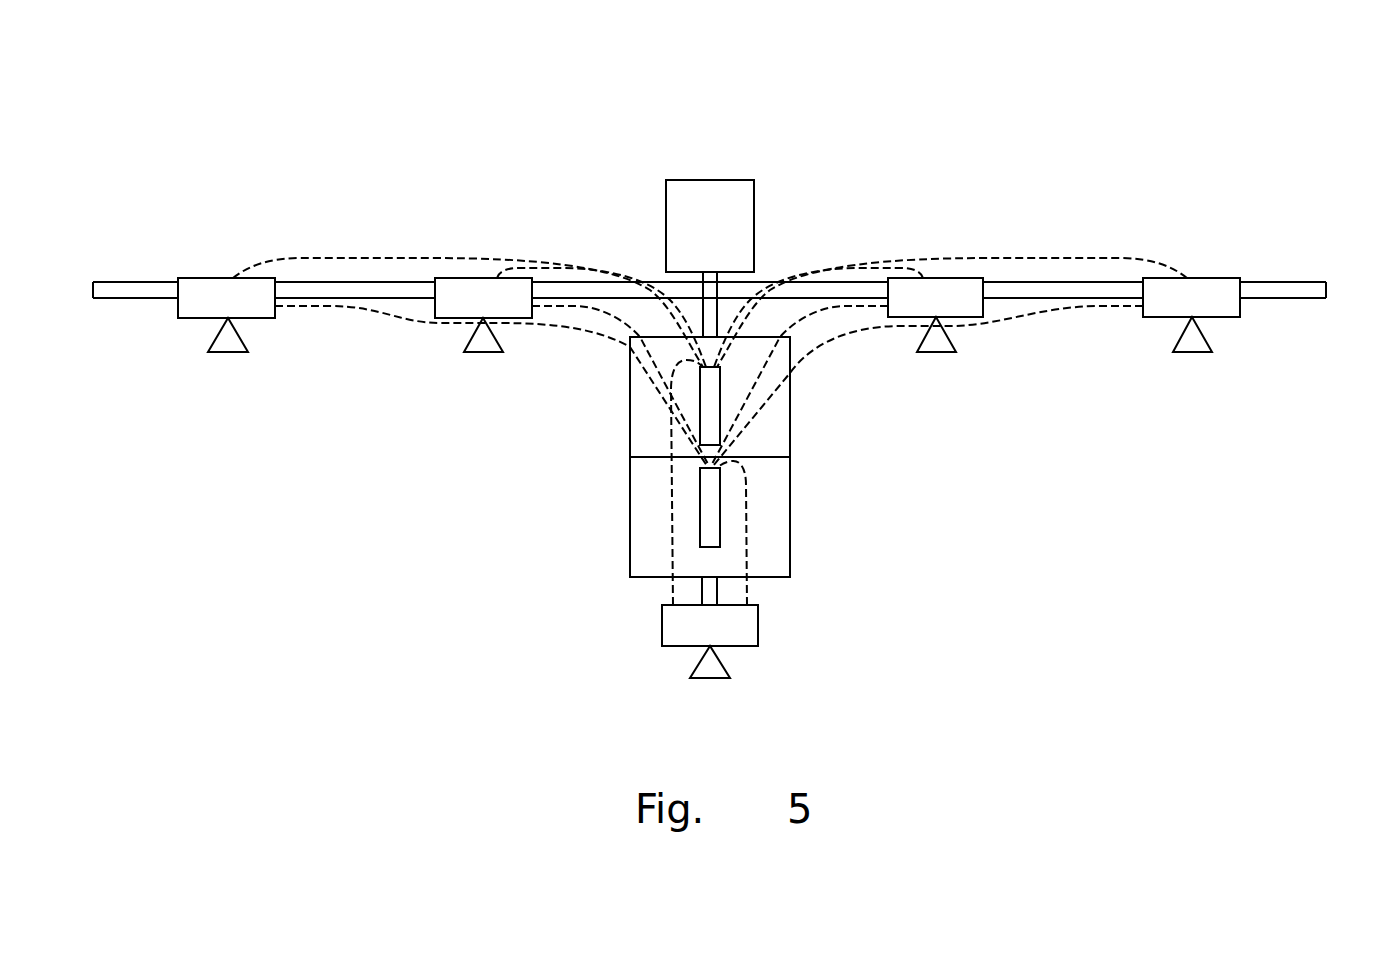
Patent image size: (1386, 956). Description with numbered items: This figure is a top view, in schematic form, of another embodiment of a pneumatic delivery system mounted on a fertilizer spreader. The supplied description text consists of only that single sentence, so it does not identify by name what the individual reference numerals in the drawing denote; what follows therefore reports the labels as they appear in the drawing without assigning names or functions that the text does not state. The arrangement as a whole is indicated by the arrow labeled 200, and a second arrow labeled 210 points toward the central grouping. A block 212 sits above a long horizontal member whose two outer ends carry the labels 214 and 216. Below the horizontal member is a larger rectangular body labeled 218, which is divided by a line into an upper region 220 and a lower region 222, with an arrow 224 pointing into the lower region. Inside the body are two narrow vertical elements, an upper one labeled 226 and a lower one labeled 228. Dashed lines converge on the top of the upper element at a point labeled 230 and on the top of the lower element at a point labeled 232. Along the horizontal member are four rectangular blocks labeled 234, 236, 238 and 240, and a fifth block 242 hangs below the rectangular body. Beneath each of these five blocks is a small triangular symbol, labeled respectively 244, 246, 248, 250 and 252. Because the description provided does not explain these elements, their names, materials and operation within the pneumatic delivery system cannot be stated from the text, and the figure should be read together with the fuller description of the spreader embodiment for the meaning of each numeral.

The torque sensing system 200 is at (257, 135).
The torque sensor 210 is at (690, 471).
The controller 212 is at (680, 197).
The first shaft portion 214 is at (131, 282).
The second shaft portion 216 is at (1298, 284).
The sensor housing 218 is at (791, 528).
The first housing portion 220 is at (766, 412).
The second housing portion 222 is at (796, 530).
The sensor shaft 224 is at (655, 488).
The first sensing element 226 is at (721, 413).
The second sensing element 228 is at (721, 503).
The first signal connections 230 is at (719, 366).
The second signal connections 232 is at (702, 468).
The first bearing 234 is at (222, 290).
The second bearing 236 is at (508, 312).
The third bearing 238 is at (952, 287).
The fourth bearing 240 is at (1205, 288).
The fifth bearing 242 is at (662, 636).
The first support 244 is at (231, 346).
The second support 246 is at (483, 350).
The third support 248 is at (940, 348).
The fourth support 250 is at (1195, 350).
The fifth support 252 is at (716, 680).